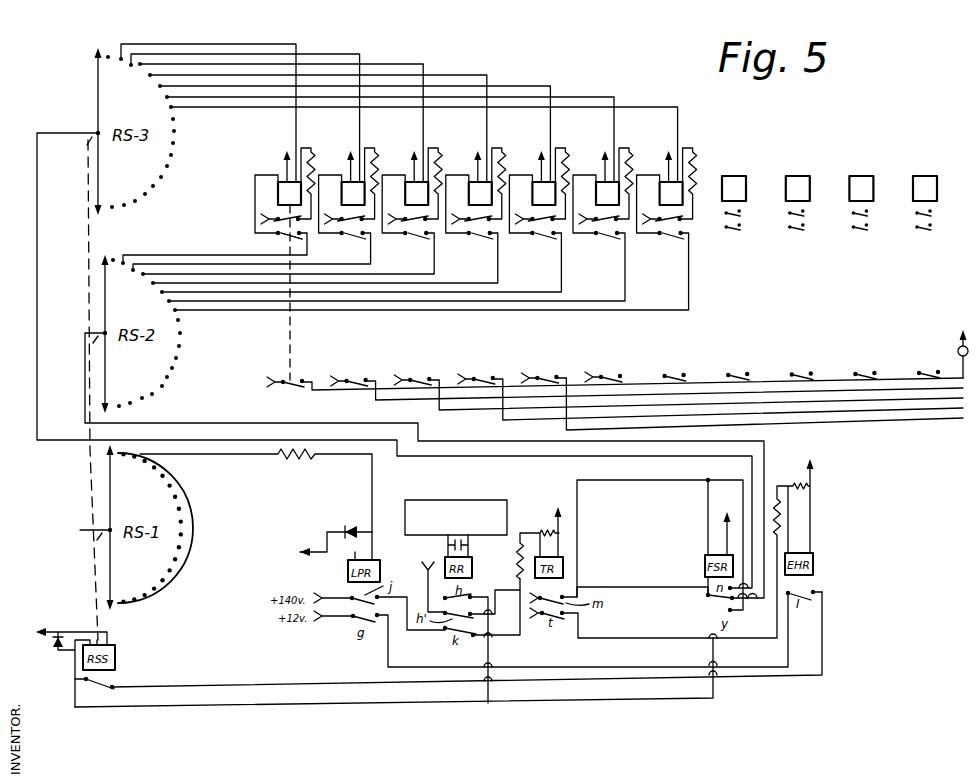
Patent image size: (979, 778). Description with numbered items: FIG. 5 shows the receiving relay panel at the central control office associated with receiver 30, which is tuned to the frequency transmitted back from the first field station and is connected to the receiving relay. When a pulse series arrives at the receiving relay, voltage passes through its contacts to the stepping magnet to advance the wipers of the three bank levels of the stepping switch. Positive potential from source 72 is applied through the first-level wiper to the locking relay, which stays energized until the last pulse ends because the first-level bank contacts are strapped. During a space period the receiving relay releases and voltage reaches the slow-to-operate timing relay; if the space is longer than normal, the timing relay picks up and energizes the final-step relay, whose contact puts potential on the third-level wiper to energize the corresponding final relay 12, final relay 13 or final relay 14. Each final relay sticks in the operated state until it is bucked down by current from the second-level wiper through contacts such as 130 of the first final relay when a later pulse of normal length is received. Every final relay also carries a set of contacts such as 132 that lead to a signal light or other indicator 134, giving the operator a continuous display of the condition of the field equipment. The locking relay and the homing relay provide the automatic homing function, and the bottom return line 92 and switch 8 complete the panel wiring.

The final relay R12 12 is at (285, 193).
The final relay R13 13 is at (349, 193).
The final relay R14 14 is at (412, 193).
The contacts of relay R12 130 is at (286, 237).
The final relay contacts 132 is at (289, 386).
The signal light or indicator 134 is at (958, 352).
The receiver 30 is at (470, 500).
The positive potential source 72 is at (83, 529).
The ground/return line 92 is at (640, 699).
The switch contact 8 is at (94, 689).